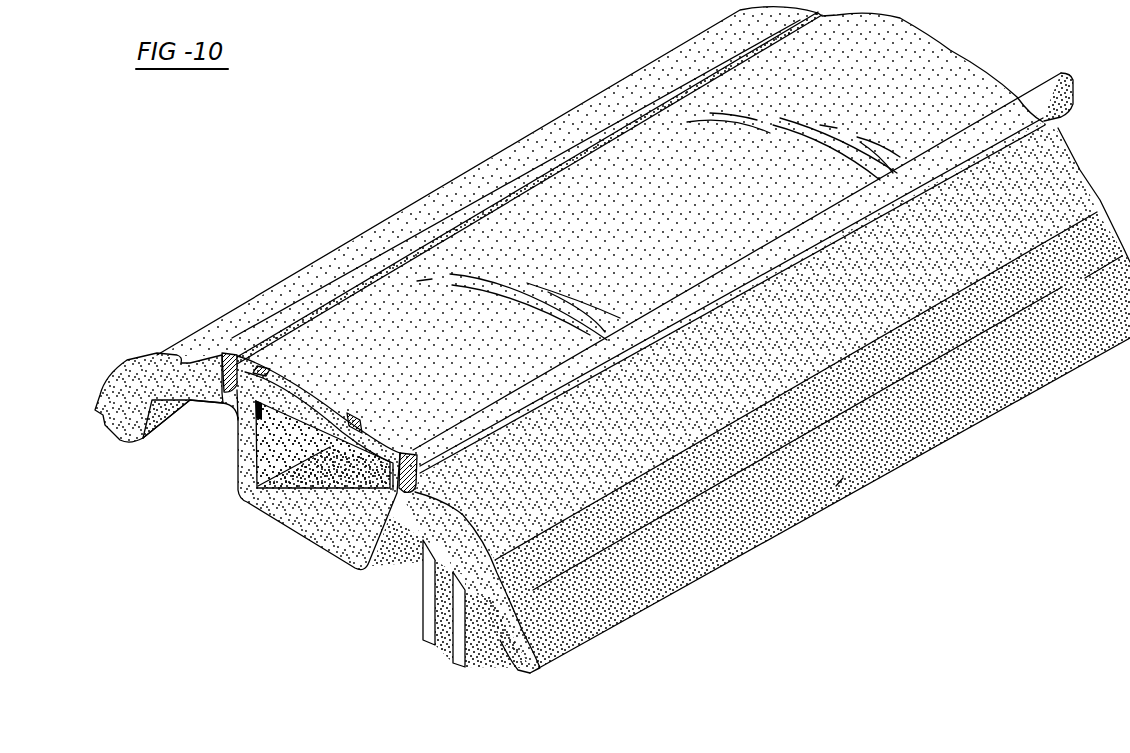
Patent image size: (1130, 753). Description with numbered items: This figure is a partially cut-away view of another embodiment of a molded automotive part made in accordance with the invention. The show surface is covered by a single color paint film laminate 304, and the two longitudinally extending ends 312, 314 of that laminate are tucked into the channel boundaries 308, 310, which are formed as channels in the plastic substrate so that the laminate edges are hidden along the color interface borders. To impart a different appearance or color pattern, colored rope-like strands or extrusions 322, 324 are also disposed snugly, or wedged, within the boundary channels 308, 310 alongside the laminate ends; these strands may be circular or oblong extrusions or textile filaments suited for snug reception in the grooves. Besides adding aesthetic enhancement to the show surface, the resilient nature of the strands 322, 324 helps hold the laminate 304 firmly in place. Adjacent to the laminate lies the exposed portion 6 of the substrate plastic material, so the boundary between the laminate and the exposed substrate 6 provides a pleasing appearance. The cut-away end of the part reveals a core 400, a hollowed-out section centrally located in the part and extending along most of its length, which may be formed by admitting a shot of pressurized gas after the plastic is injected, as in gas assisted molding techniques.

The single color paint film laminate 304 is at (962, 53).
The channel boundary 308 is at (180, 362).
The channel boundary 310 is at (445, 432).
The longitudinally extending end 312 is at (207, 403).
The longitudinally extending end 314 is at (350, 533).
The colored rope-like strand 322 is at (228, 352).
The colored rope-like strand 324 is at (1050, 120).
The core 400 is at (338, 498).
The exposed portion of the substrate 6 is at (843, 472).